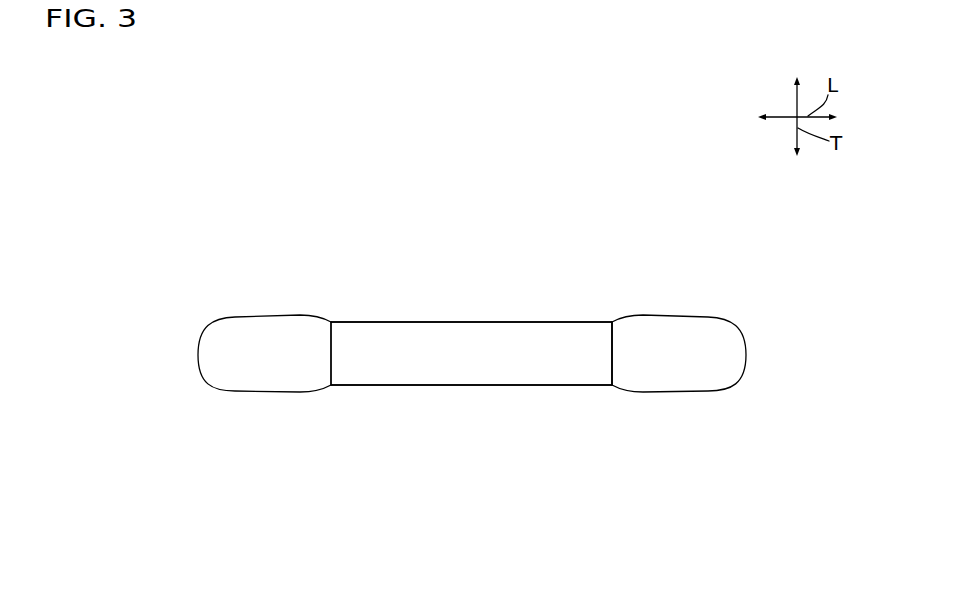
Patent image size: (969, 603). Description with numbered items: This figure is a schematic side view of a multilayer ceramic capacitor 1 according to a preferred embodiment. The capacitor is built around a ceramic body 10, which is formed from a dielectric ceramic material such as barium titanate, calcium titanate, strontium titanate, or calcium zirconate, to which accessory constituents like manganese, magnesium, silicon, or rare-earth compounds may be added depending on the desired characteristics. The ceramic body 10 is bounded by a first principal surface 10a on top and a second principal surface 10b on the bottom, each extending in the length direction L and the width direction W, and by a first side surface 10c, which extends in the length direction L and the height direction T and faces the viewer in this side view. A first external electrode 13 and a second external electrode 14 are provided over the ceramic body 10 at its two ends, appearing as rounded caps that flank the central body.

The multilayer ceramic capacitor 1 is at (597, 251).
The ceramic body 10 is at (500, 316).
The first principal surface 10a is at (452, 321).
The second principal surface 10b is at (477, 386).
The first side surface 10c is at (562, 368).
The first external electrode 13 is at (266, 309).
The second external electrode 14 is at (684, 308).